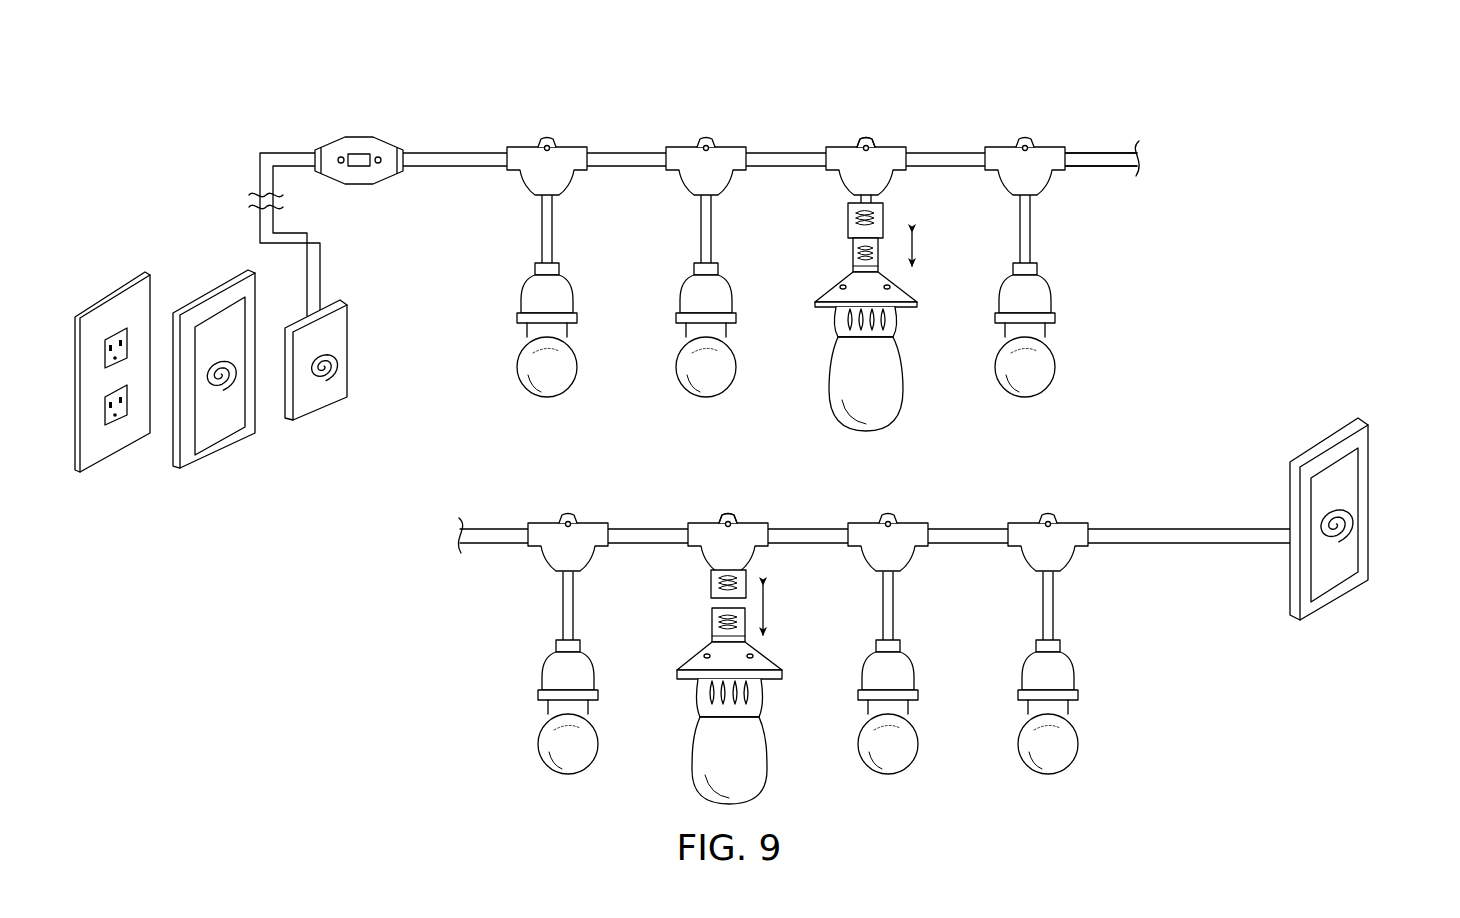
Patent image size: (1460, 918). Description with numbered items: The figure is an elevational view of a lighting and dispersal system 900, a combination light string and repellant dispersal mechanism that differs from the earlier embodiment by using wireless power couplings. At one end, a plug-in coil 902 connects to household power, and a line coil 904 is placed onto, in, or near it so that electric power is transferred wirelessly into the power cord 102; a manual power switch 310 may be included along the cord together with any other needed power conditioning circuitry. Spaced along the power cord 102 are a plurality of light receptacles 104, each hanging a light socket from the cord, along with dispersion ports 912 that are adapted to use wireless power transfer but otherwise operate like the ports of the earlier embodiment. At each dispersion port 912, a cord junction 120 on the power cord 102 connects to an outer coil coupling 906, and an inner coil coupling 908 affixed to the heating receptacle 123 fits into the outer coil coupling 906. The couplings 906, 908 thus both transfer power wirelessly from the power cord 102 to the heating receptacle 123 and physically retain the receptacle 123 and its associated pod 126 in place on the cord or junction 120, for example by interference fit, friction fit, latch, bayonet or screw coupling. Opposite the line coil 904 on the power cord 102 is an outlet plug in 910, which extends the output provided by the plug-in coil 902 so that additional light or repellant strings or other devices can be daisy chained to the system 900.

The lighting and dispersal system 900 is at (1121, 77).
The power cord 102 is at (466, 152).
The light receptacle 104 is at (531, 125).
The dispersion port 912 is at (851, 125).
The cord junction 120 is at (889, 147).
The outer coil coupling 906 is at (884, 221).
The inner coil coupling 908 is at (853, 253).
The heating receptacle 123 is at (898, 283).
The pod 126 is at (904, 396).
The power switch 310 is at (336, 143).
The plug-in coil 902 is at (218, 457).
The line coil 904 is at (320, 410).
The outlet plug in 910 is at (1372, 446).